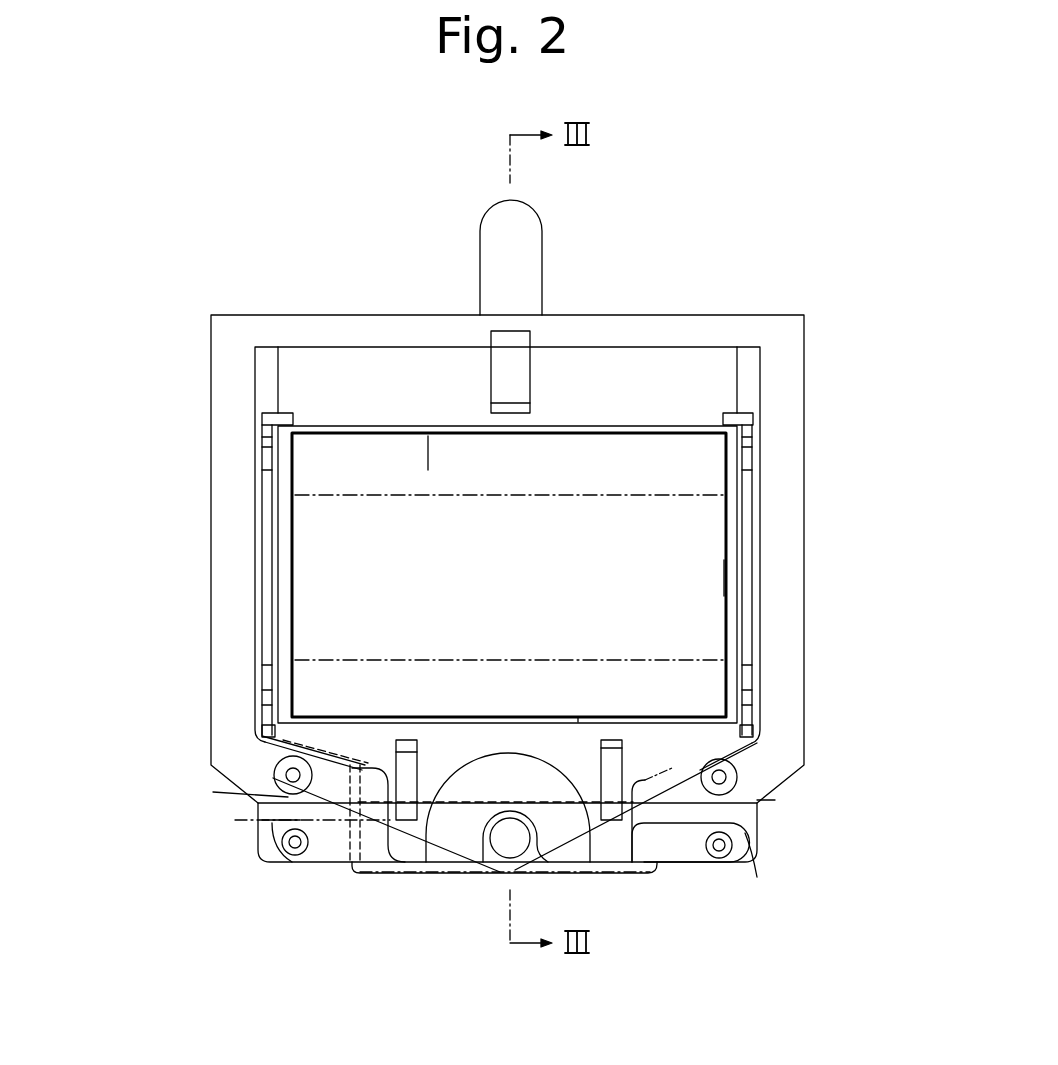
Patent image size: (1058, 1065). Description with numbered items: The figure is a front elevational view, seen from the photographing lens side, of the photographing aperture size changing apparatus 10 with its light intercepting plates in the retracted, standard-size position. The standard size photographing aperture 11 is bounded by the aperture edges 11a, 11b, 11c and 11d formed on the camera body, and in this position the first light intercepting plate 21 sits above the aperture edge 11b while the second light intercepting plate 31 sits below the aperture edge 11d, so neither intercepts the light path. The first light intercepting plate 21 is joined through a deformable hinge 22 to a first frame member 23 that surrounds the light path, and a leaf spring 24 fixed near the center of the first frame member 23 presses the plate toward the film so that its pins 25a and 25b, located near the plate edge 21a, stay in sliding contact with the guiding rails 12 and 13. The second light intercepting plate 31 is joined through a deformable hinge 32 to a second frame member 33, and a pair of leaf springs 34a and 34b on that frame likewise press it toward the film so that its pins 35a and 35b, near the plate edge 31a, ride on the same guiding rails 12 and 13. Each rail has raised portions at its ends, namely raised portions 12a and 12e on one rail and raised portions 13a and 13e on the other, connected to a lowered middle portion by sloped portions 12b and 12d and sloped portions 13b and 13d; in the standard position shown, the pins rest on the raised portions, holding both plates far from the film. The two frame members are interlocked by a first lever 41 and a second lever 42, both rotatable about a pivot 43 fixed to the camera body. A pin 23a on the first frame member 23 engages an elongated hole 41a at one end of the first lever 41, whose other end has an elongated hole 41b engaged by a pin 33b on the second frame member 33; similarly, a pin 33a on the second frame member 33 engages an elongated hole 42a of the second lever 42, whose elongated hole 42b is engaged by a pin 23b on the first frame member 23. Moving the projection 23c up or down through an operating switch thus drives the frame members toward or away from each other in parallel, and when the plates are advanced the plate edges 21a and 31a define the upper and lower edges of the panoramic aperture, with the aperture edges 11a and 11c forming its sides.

The photographing aperture size changing apparatus 10 is at (813, 230).
The photographing aperture 11 is at (294, 578).
The aperture edge 11a is at (295, 477).
The aperture edge 11b is at (428, 465).
The aperture edge 11c is at (728, 578).
The aperture edge 11d is at (462, 717).
The guiding rail 12 is at (268, 545).
The raised portion 12a is at (264, 437).
The sloped portion 12b is at (268, 470).
The sloped portion 12d is at (265, 687).
The raised portion 12e is at (265, 700).
The guiding rail 13 is at (748, 548).
The raised portion 13a is at (755, 432).
The sloped portion 13b is at (752, 470).
The sloped portion 13d is at (752, 687).
The raised portion 13e is at (752, 700).
The first light intercepting plate 21 is at (352, 362).
The plate edge 21a is at (637, 432).
The deformable hinge 22 is at (688, 347).
The first frame member 23 is at (602, 338).
The pin 23a is at (275, 778).
The pin 23b is at (742, 762).
The projection 23c is at (536, 214).
The leaf spring 24 is at (505, 385).
The pin 25a is at (272, 410).
The pin 25b is at (742, 410).
The second light intercepting plate 31 is at (670, 752).
The plate edge 31a is at (578, 720).
The deformable hinge 32 is at (368, 863).
The second frame member 33 is at (765, 840).
The pin 33a is at (294, 862).
The pin 33b is at (718, 860).
The leaf spring 34a is at (405, 793).
The leaf spring 34b is at (612, 800).
The pin 35a is at (262, 742).
The pin 35b is at (757, 742).
The first lever 41 is at (461, 855).
The elongated hole 41a is at (258, 789).
The elongated hole 41b is at (757, 877).
The second lever 42 is at (262, 856).
The elongated hole 42a is at (262, 822).
The elongated hole 42b is at (760, 800).
The pivot 43 is at (508, 847).